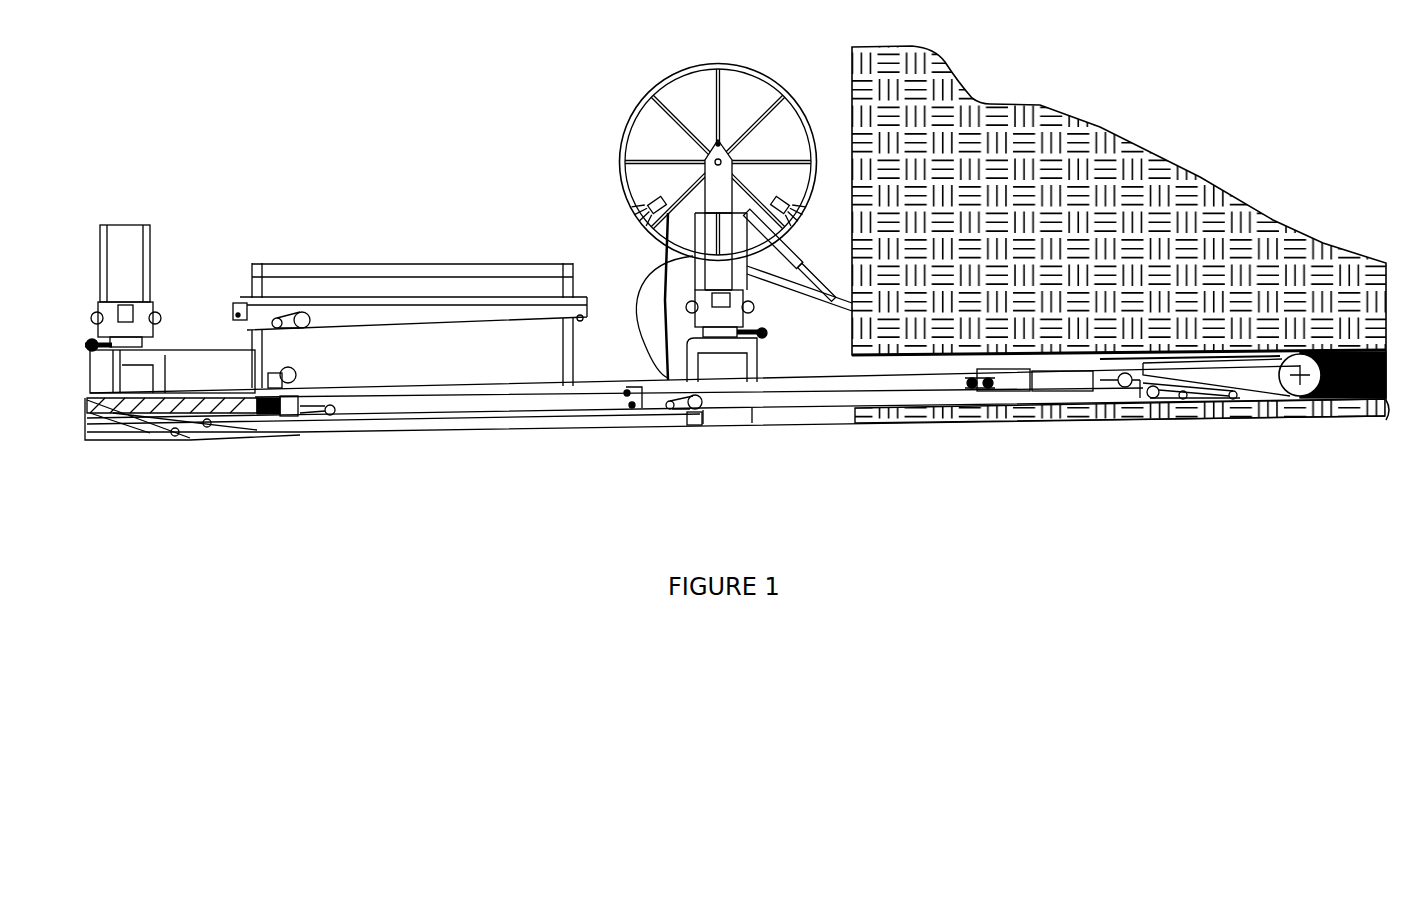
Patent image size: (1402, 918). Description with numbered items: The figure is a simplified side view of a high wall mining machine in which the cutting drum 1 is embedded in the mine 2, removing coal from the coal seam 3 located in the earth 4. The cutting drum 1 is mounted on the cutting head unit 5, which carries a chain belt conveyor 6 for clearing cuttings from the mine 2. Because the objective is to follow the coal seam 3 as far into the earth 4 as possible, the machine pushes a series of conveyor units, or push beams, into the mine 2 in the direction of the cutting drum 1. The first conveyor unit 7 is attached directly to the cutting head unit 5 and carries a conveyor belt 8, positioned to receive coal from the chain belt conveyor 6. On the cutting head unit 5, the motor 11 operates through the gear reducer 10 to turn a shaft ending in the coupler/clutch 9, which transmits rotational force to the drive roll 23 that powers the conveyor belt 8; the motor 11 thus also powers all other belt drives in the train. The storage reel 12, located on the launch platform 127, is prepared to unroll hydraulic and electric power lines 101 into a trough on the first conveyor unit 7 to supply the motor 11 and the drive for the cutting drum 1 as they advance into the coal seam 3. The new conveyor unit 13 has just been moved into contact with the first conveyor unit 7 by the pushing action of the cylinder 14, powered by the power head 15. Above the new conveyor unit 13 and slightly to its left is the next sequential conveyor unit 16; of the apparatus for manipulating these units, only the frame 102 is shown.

The cutting drum 1 is at (1306, 398).
The mine 2 is at (862, 366).
The coal seam 3 is at (1386, 397).
The earth 4 is at (1045, 105).
The cutting head unit 5 is at (1218, 400).
The chain belt conveyor 6 is at (1012, 398).
The first conveyor unit 7 is at (782, 399).
The conveyor belt 8 is at (824, 392).
The coupler/clutch 9 is at (986, 395).
The gear reducer 10 is at (1052, 400).
The motor 11 is at (1098, 400).
The storage reel 12 is at (622, 160).
The new conveyor unit 13 is at (512, 400).
The cylinder 14 is at (222, 415).
The power head 15 is at (284, 416).
The next sequential conveyor unit 16 is at (245, 300).
The drive roll 23 is at (704, 418).
The hydraulic and electric power lines 101 is at (655, 298).
The frame 102 is at (490, 265).
The launch platform 127 is at (690, 356).